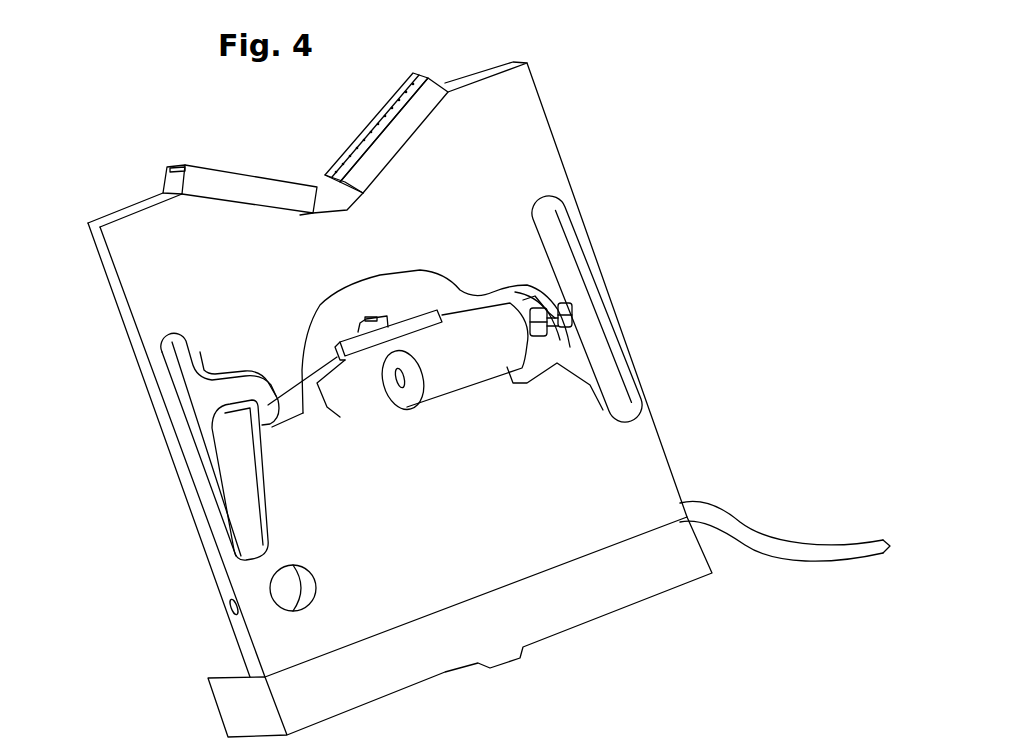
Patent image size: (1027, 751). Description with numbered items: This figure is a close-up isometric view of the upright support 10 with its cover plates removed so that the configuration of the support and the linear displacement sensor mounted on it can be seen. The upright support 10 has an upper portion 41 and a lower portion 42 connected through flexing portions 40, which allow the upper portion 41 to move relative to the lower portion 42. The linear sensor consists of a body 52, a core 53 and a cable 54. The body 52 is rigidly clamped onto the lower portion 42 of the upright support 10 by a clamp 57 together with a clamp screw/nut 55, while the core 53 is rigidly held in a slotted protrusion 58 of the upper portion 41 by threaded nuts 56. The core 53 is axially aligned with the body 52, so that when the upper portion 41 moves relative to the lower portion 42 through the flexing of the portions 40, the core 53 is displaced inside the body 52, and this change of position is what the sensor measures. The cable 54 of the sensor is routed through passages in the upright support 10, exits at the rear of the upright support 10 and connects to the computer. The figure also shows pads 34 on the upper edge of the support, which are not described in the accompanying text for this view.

The upright support 10 is at (680, 440).
The pad 34 is at (207, 182).
The flexing portions 40 is at (598, 280).
The upper portion 41 is at (440, 200).
The lower portion 42 is at (528, 533).
The body 52 is at (513, 352).
The core 53 is at (573, 330).
The cable 54 is at (735, 525).
The clamp screw/nut 55 is at (370, 320).
The threaded nuts 56 is at (570, 313).
The clamp 57 is at (337, 350).
The slotted protrusion 58 is at (545, 287).